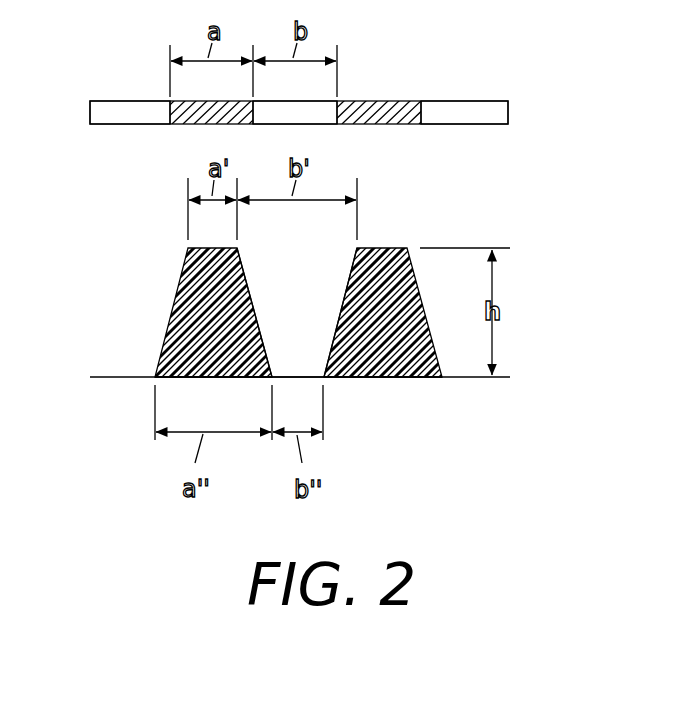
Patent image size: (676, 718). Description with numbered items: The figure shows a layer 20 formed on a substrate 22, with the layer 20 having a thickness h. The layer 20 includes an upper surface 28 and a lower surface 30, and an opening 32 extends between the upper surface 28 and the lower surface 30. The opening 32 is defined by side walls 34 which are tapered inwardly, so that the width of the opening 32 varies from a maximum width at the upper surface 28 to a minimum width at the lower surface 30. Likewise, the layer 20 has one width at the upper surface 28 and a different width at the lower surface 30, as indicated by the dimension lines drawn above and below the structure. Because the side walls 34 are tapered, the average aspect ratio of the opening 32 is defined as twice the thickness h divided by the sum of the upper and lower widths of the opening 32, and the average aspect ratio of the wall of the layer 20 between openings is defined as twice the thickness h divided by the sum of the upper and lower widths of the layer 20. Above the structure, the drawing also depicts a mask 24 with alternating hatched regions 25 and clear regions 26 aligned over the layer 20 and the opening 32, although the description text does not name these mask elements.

The layer 20 is at (298, 318).
The substrate 22 is at (96, 385).
The mask 24 is at (501, 95).
The opaque mask regions 25 is at (188, 124).
The transparent mask regions 26 is at (120, 101).
The upper surface 28 is at (383, 247).
The lower surface 30 is at (408, 378).
The opening 32 is at (308, 353).
The side walls 34 is at (338, 310).